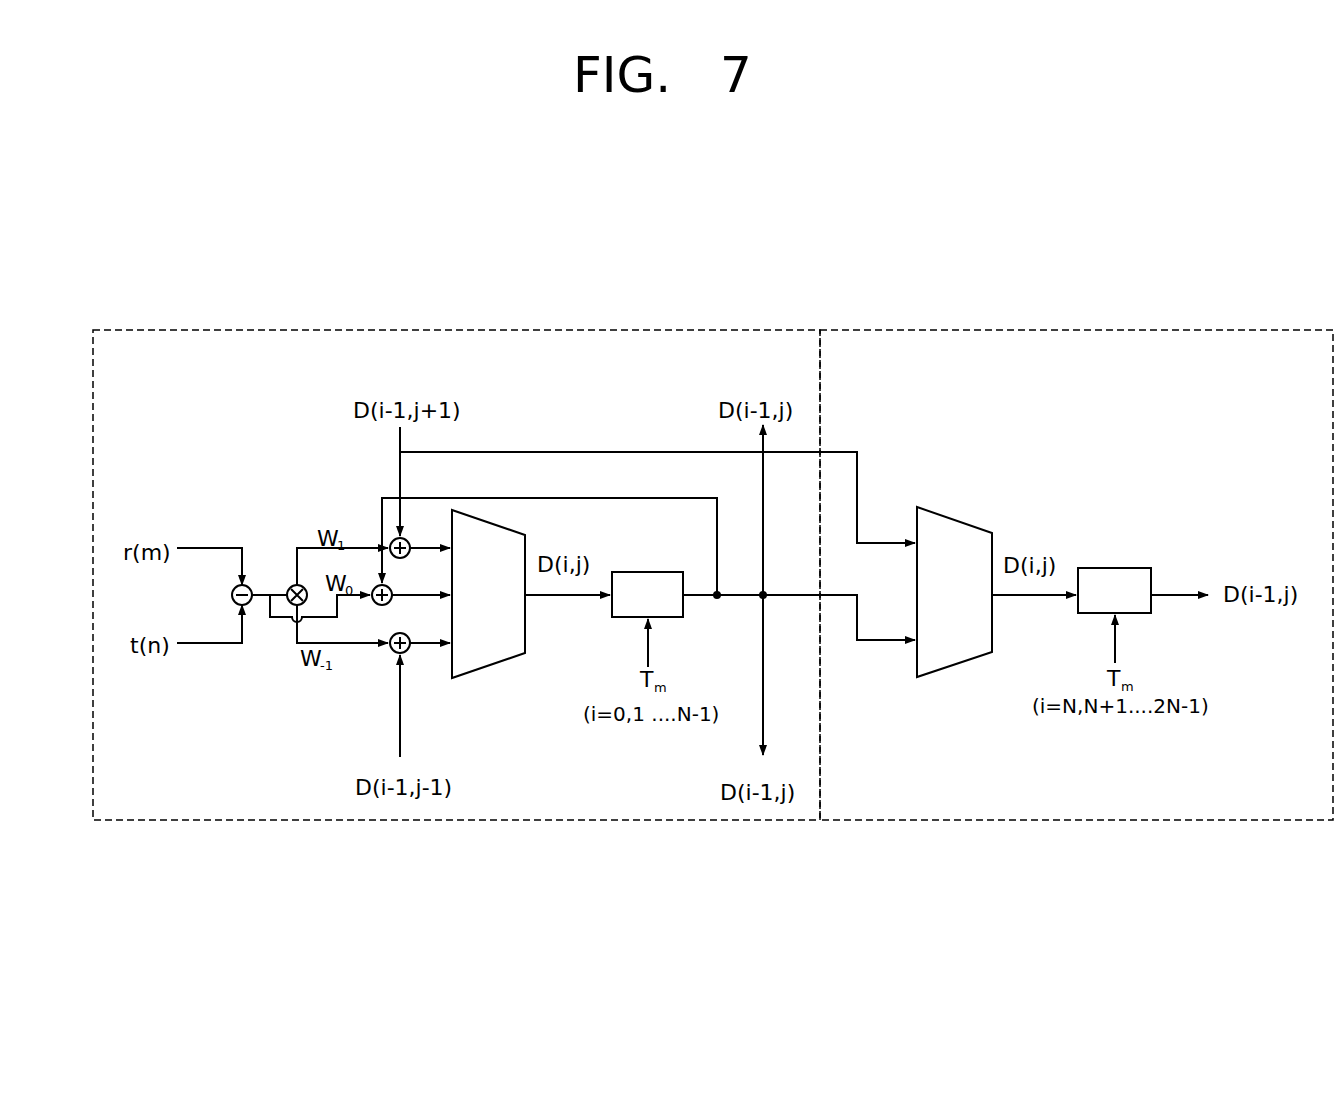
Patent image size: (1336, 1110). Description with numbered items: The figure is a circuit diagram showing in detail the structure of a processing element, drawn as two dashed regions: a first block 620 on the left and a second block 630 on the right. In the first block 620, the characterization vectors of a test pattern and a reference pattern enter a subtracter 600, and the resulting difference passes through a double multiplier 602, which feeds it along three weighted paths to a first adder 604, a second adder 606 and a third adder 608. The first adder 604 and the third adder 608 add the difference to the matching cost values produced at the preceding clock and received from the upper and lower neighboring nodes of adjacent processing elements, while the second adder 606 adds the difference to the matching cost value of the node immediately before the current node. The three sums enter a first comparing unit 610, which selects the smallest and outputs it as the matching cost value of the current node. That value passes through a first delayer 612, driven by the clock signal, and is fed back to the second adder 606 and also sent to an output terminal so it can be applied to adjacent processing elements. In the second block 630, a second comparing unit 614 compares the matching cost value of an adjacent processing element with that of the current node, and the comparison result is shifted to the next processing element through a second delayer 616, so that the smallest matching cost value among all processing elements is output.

The subtracter 600 is at (232, 595).
The double multiplier 602 is at (291, 587).
The first adder 604 is at (394, 541).
The second adder 606 is at (375, 605).
The third adder 608 is at (409, 652).
The first comparing unit 610 is at (485, 668).
The first delayer 612 is at (648, 572).
The second comparing unit 614 is at (955, 517).
The second delayer 616 is at (1113, 568).
The first block 620 is at (610, 330).
The second block 630 is at (1068, 330).